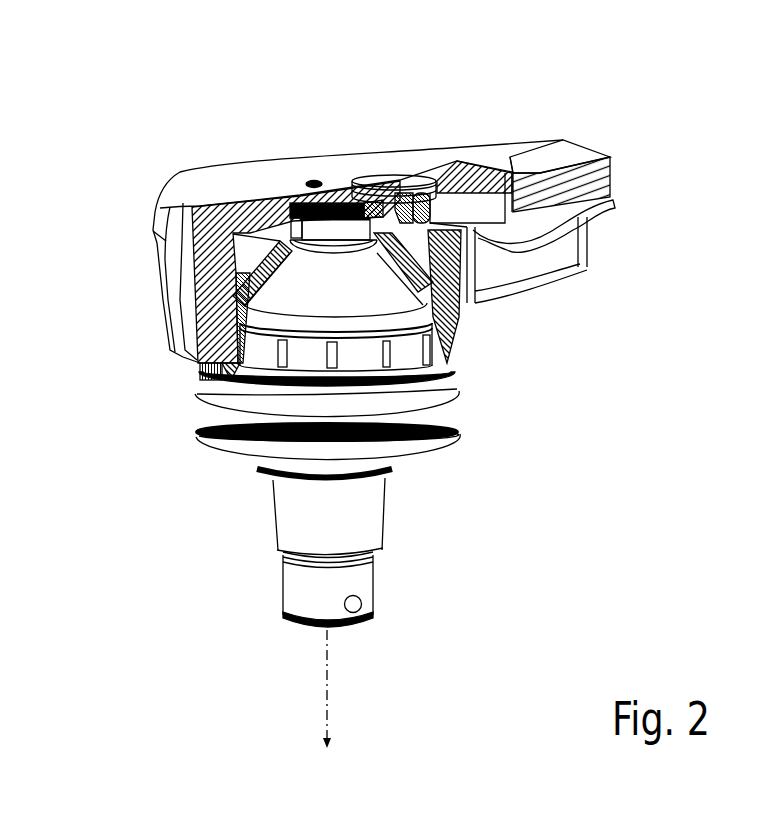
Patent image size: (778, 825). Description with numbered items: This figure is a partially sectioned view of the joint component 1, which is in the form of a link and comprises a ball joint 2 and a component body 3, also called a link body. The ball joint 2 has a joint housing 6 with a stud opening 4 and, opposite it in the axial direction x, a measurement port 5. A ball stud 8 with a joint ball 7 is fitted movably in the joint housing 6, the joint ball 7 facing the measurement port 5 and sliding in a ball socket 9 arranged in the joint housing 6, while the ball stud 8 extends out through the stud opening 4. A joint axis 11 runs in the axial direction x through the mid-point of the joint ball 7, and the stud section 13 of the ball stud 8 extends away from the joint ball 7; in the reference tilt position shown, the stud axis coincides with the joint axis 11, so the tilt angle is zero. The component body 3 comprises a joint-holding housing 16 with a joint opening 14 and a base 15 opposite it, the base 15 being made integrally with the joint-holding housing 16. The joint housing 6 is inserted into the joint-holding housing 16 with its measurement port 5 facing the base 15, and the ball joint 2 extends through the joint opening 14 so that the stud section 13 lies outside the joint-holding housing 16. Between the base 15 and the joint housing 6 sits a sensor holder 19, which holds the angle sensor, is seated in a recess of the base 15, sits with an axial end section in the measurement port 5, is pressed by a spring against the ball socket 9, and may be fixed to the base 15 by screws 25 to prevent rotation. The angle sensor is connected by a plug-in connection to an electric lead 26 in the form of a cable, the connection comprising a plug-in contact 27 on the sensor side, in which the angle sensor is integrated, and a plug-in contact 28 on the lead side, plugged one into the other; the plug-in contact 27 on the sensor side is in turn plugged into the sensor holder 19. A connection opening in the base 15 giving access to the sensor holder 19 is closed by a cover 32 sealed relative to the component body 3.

The joint component 1 is at (152, 100).
The ball joint 2 is at (190, 490).
The component body 3 is at (600, 135).
The stud opening 4 is at (232, 404).
The measurement port 5 is at (280, 231).
The joint housing 6 is at (222, 292).
The joint ball 7 is at (333, 330).
The ball stud 8 is at (400, 520).
The ball socket 9 is at (415, 312).
The joint axis 11 is at (328, 657).
The stud section 13 is at (370, 540).
The joint opening 14 is at (227, 381).
The base 15 is at (192, 186).
The joint-holding housing 16 is at (156, 316).
The sensor holder 19 is at (318, 222).
The screws 25 is at (307, 183).
The electric lead 26 is at (547, 233).
The plug-in contact on the sensor side 27 is at (385, 200).
The plug-in contact on the lead side 28 is at (408, 210).
The cover 32 is at (497, 163).
The axial direction x is at (327, 722).